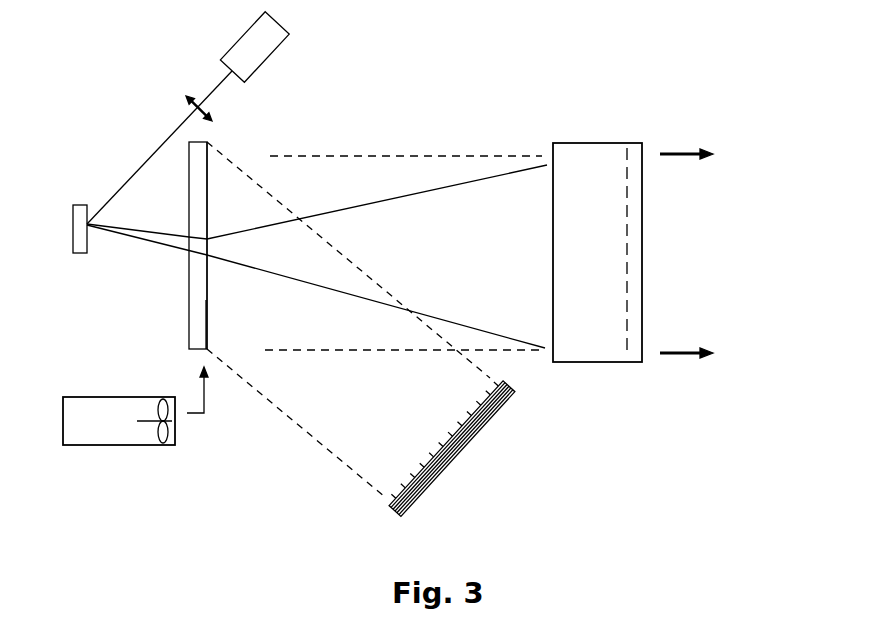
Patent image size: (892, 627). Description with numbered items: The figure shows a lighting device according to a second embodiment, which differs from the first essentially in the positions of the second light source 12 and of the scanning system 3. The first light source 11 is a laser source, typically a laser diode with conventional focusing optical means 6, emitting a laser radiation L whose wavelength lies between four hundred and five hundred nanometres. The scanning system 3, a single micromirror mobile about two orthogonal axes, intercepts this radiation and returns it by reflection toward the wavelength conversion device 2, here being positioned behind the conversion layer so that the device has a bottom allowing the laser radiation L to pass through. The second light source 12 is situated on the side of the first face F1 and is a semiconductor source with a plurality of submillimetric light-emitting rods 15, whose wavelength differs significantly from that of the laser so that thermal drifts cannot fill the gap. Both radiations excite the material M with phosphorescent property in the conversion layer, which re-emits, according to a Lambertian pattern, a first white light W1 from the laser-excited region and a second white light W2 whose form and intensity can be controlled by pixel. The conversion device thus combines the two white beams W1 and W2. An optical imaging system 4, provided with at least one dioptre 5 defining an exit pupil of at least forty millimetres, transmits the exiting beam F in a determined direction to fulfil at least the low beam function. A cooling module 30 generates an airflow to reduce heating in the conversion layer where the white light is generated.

The wavelength conversion device 2 is at (189, 283).
The scanning system 3 is at (78, 205).
The optical imaging system 4 is at (597, 145).
The dioptre 5 is at (623, 335).
The focusing optical means 6 is at (183, 102).
The first light source 11 is at (255, 30).
The second light source 12 is at (475, 438).
The light-emitting rods 15 is at (418, 467).
The cooling module 30 is at (120, 445).
The laser radiation L is at (122, 227).
The material with phosphorescent property M is at (199, 297).
The first face F1 is at (206, 324).
The first white light beam W1 is at (455, 185).
The second white light beam W2 is at (345, 155).
The exiting beam F is at (678, 148).